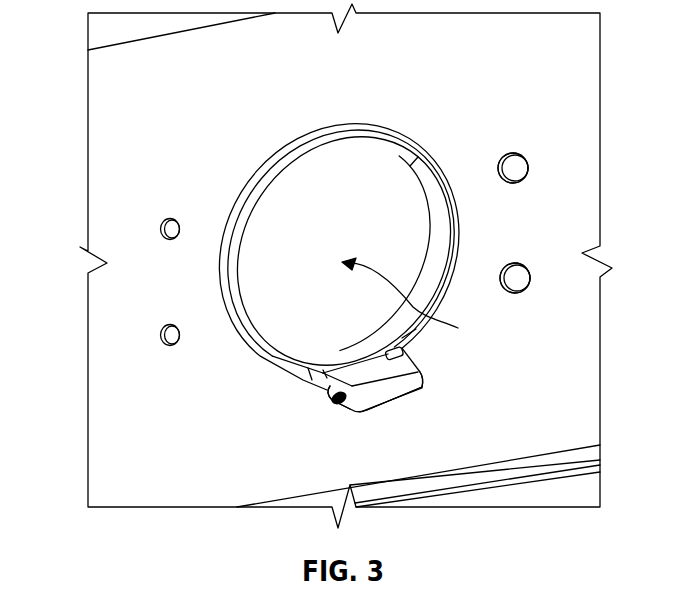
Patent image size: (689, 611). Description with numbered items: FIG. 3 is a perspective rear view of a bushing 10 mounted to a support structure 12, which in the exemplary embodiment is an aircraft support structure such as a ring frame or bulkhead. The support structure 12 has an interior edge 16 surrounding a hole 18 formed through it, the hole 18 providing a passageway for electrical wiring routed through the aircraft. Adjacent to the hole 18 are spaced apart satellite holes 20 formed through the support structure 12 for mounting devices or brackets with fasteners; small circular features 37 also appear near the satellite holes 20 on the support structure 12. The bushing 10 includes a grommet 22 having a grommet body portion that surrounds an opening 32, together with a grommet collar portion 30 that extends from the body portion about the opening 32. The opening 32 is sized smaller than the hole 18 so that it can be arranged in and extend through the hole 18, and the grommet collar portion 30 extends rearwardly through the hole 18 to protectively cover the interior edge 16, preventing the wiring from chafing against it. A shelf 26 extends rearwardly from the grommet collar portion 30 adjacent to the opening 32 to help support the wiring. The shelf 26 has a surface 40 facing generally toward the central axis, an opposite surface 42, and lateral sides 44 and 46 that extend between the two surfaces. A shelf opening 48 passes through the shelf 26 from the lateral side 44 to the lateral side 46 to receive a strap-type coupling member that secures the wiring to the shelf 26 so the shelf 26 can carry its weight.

The bushing 10 is at (406, 137).
The support structure 12 is at (160, 386).
The interior edge 16 is at (344, 124).
The hole 18 is at (464, 231).
The satellite holes 20 is at (160, 225).
The grommet 22 is at (294, 146).
The shelf 26 is at (385, 372).
The grommet collar portion 30 is at (440, 272).
The opening 32 is at (415, 300).
The mounting holes 37 is at (517, 166).
The surface 40 is at (367, 370).
The surface 42 is at (392, 413).
The lateral side 44 is at (420, 382).
The lateral side 46 is at (321, 393).
The shelf opening 48 is at (333, 401).